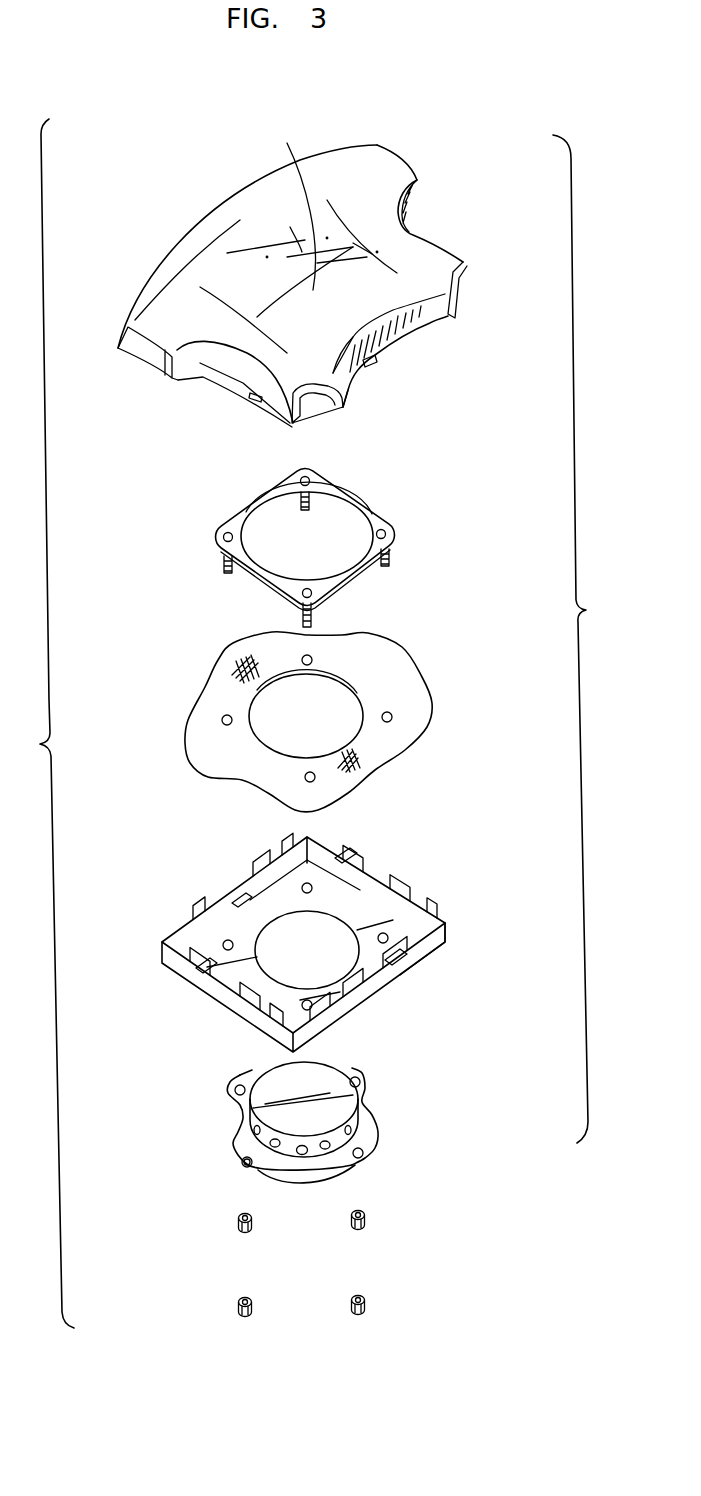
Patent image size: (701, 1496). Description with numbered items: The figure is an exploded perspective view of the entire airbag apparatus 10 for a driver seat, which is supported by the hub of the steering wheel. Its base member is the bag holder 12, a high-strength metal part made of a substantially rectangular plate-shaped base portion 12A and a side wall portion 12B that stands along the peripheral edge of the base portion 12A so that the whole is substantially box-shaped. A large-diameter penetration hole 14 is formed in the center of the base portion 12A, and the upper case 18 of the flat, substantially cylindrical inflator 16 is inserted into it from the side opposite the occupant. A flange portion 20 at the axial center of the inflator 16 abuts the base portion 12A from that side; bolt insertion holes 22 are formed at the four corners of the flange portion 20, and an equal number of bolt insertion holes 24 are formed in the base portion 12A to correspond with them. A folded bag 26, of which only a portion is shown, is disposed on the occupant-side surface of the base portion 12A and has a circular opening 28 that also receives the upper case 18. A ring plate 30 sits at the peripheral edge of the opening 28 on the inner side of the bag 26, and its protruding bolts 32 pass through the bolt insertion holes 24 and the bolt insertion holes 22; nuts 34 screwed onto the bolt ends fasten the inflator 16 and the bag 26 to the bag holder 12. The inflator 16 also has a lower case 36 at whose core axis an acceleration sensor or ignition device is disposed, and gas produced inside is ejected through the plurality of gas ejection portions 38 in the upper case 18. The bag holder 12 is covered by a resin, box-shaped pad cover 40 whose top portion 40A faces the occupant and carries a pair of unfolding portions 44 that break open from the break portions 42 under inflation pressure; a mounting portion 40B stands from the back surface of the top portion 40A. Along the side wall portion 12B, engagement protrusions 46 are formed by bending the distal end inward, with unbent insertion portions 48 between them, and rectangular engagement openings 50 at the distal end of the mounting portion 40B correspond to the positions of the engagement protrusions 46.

The airbag apparatus 10 is at (332, 723).
The bag holder 12 is at (466, 866).
The base portion 12A is at (330, 885).
The side wall portion 12B is at (445, 940).
The penetration hole 14 is at (270, 930).
The inflator 16 is at (478, 1085).
The upper case 18 is at (335, 1103).
The flange portion 20 is at (378, 1125).
The bolt insertion holes 22 is at (246, 1159).
The bolt insertion holes 24 is at (307, 883).
The bag 26 is at (471, 681).
The opening 28 is at (350, 692).
The ring plate 30 is at (464, 478).
The bolts 32 is at (303, 511).
The nuts 34 is at (238, 1222).
The lower case 36 is at (303, 1187).
The gas ejection portions 38 is at (330, 1150).
The pad cover 40 is at (501, 225).
The top portion 40A is at (237, 212).
The mounting portion 40B is at (397, 347).
The break portions 42 is at (353, 243).
The unfolding portions 44 is at (290, 227).
The engagement protrusions 46 is at (195, 978).
The insertion portions 48 is at (230, 990).
The engagement openings 50 is at (372, 363).